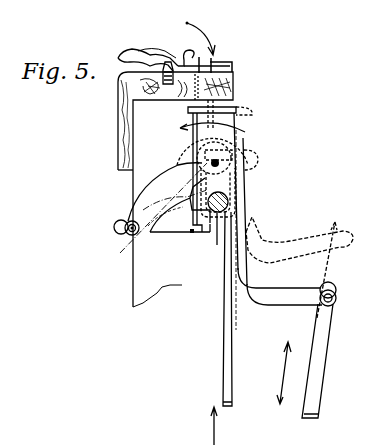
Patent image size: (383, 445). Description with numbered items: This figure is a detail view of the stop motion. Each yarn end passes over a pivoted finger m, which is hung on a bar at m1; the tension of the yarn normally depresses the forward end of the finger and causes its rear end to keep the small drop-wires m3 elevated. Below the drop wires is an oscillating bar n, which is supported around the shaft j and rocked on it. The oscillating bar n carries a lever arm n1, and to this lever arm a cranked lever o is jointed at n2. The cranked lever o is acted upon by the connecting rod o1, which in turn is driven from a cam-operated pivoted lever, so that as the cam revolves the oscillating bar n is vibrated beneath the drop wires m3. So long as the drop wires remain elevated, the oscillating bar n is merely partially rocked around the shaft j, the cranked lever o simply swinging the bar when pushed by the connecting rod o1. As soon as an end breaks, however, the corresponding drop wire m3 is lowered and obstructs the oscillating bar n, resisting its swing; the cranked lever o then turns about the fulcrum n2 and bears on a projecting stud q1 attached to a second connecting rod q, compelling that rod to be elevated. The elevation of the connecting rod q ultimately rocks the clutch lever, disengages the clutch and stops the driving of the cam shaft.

The pivoted finger m is at (143, 25).
The bar pivot m1 is at (168, 90).
The drop-wires m3 is at (210, 82).
The oscillating bar n is at (244, 142).
The lever arm n1 is at (143, 203).
The joint (fulcrum) n2 is at (130, 236).
The cranked lever o is at (298, 236).
The connecting rod o1 is at (320, 366).
The connecting rod q is at (215, 328).
The projecting stud q1 is at (237, 148).
The shaft j is at (207, 252).